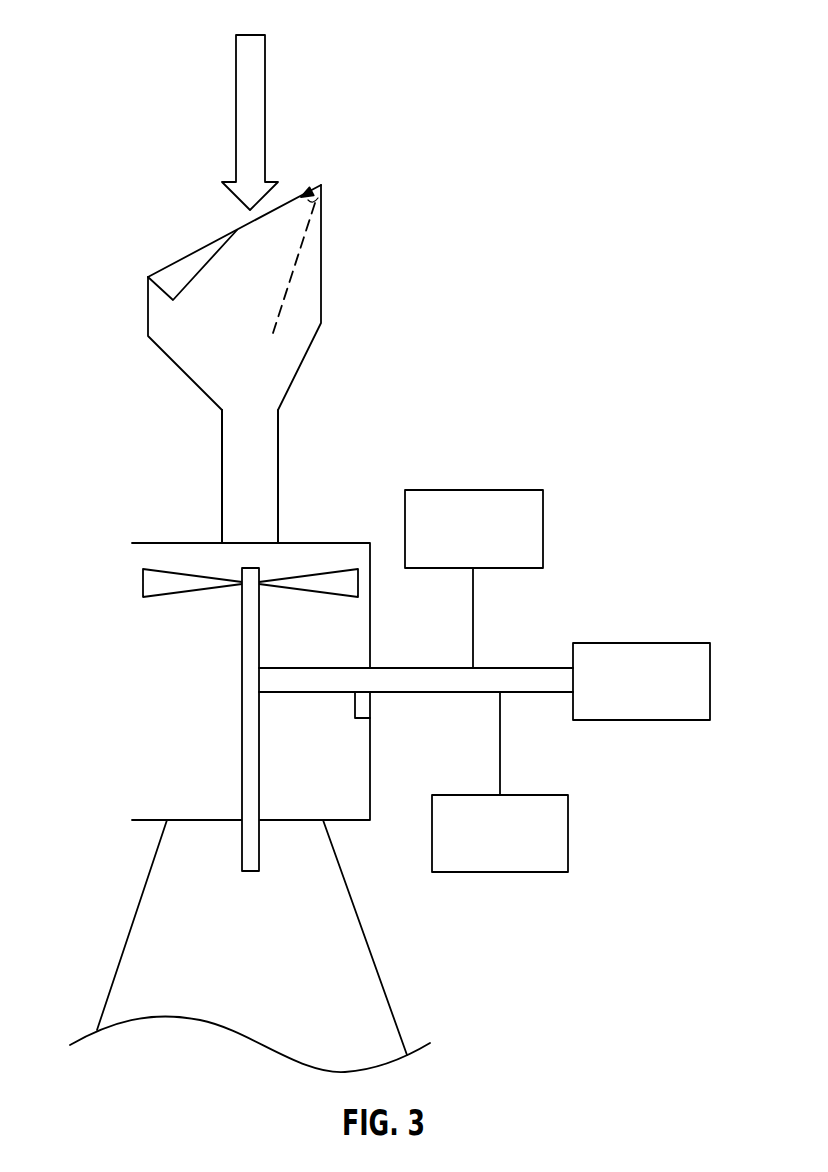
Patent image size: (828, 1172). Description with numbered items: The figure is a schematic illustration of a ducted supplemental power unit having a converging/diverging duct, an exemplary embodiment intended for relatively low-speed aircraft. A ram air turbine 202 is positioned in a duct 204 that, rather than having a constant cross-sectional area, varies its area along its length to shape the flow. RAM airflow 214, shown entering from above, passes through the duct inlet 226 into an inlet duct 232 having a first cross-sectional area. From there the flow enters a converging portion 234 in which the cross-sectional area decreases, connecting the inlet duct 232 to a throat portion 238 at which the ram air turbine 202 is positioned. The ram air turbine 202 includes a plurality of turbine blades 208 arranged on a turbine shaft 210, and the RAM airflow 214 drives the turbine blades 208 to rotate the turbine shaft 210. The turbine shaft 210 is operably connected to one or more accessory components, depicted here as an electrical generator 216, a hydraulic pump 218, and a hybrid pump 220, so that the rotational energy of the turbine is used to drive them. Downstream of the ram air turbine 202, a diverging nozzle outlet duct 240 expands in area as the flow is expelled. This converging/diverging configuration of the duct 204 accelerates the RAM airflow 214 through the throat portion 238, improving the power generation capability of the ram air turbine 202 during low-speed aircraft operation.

The ram air turbine 202 is at (484, 145).
The duct 204 is at (235, 457).
The turbine blades 208 is at (155, 582).
The turbine shaft 210 is at (250, 712).
The RAM airflow 214 is at (252, 123).
The electrical generator 216 is at (638, 643).
The hydraulic pump 218 is at (472, 490).
The hybrid pump 220 is at (518, 795).
The duct inlet 226 is at (312, 191).
The inlet duct 232 is at (187, 322).
The converging portion 234 is at (300, 367).
The throat portion 238 is at (233, 490).
The diverging nozzle outlet duct 240 is at (143, 954).